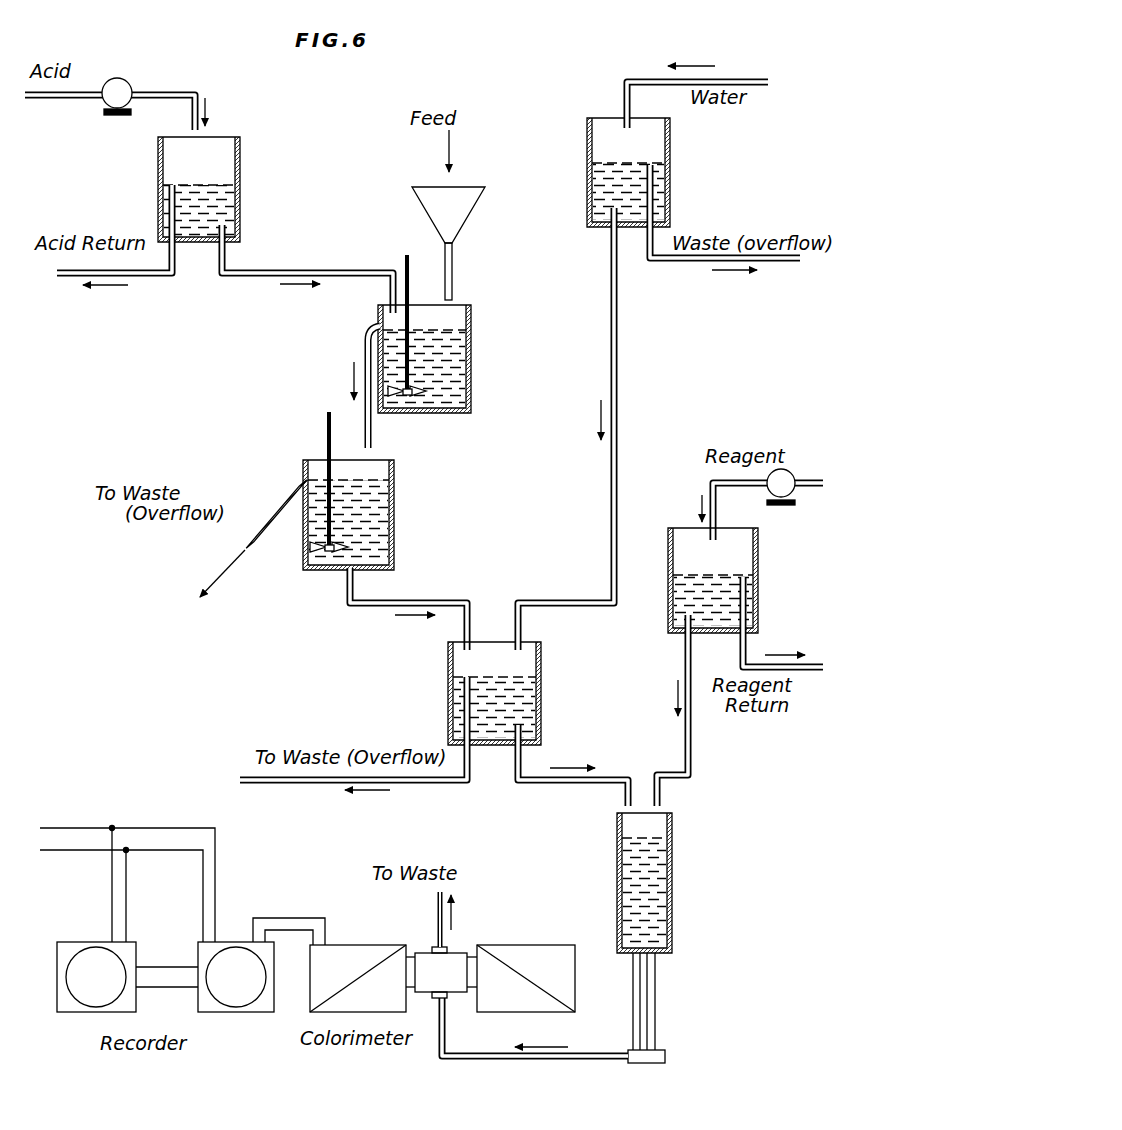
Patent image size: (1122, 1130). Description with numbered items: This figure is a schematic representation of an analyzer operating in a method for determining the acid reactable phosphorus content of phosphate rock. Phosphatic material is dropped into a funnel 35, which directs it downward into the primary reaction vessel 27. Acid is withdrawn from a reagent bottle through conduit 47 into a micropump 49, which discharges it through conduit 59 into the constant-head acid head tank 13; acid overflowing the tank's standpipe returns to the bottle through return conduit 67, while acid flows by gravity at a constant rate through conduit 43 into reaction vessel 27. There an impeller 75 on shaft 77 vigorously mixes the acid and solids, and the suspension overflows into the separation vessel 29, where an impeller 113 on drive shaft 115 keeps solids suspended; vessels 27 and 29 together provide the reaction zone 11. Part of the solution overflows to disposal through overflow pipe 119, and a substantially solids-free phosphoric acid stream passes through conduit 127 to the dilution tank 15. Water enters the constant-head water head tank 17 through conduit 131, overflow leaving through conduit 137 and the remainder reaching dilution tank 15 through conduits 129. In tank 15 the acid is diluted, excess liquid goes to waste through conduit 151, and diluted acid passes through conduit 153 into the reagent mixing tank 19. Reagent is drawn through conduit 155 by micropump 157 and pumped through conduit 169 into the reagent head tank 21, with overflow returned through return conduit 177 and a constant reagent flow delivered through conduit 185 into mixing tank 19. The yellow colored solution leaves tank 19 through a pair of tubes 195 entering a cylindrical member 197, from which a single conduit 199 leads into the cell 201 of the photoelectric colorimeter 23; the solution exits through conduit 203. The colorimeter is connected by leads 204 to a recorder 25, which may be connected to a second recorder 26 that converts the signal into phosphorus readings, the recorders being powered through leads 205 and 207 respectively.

The reaction zone 11 is at (398, 412).
The acid head tank 13 is at (242, 212).
The dilution tank 15 is at (447, 687).
The water head tank 17 is at (586, 195).
The reagent mixing tank 19 is at (617, 838).
The reagent head tank 21 is at (667, 616).
The colorimeter 23 is at (462, 950).
The recorder 25 is at (226, 940).
The recorder 26 is at (72, 940).
The primary reaction vessel 27 is at (474, 347).
The separation vessel 29 is at (397, 553).
The funnel 35 is at (470, 224).
The conduit 43 is at (355, 271).
The conduit 47 is at (80, 100).
The micropump 49 is at (128, 84).
The conduit 59 is at (188, 92).
The return conduit 67 is at (160, 278).
The impeller 75 is at (418, 392).
The shaft 77 is at (411, 292).
The impeller 113 is at (340, 548).
The drive shaft 115 is at (326, 438).
The overflow pipe 119 is at (272, 538).
The conduit 127 is at (469, 605).
The conduits 129 is at (618, 395).
The conduit 131 is at (745, 82).
The conduit 137 is at (697, 261).
The conduit 151 is at (444, 783).
The conduit 153 is at (553, 783).
The conduit 155 is at (808, 503).
The micropump 157 is at (770, 478).
The conduit 169 is at (712, 486).
The return conduit 177 is at (743, 661).
The conduit 185 is at (661, 791).
The tubes 195 is at (650, 990).
The cylindrical member 197 is at (666, 1056).
The conduit 199 is at (478, 1059).
The cell 201 is at (458, 986).
The conduit 203 is at (436, 907).
The leads 204 is at (296, 920).
The leads 205 is at (204, 862).
The leads 207 is at (113, 903).